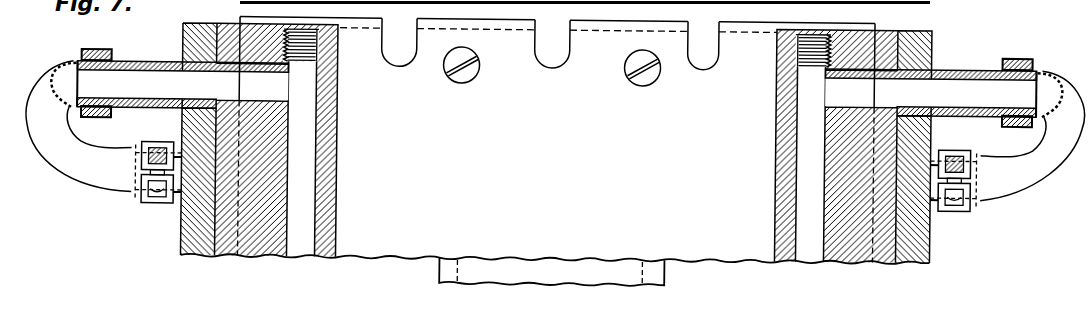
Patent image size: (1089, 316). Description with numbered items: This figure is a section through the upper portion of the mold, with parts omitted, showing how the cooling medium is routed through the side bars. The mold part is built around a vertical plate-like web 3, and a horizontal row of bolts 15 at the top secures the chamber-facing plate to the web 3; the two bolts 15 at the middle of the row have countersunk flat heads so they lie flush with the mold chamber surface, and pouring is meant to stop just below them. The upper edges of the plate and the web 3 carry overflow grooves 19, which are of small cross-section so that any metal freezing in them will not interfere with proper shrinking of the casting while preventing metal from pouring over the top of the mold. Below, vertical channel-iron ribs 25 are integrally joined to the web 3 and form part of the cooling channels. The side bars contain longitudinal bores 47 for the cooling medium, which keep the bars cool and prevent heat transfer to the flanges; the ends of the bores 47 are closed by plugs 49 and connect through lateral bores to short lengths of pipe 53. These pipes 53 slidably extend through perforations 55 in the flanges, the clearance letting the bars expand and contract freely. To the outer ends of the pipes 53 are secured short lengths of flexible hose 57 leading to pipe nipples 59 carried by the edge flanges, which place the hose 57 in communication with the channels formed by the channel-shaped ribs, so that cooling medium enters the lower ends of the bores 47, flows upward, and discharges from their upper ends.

The web 3 is at (603, 27).
The bolts 15 is at (466, 74).
The overflow grooves 19 is at (383, 58).
The vertical ribs 25 is at (443, 267).
The longitudinal bores 47 is at (309, 149).
The plugs 49 is at (307, 62).
The pipe 53 is at (147, 64).
The perforations 55 is at (186, 44).
The flexible hose 57 is at (44, 86).
The pipe nipples 59 is at (132, 193).